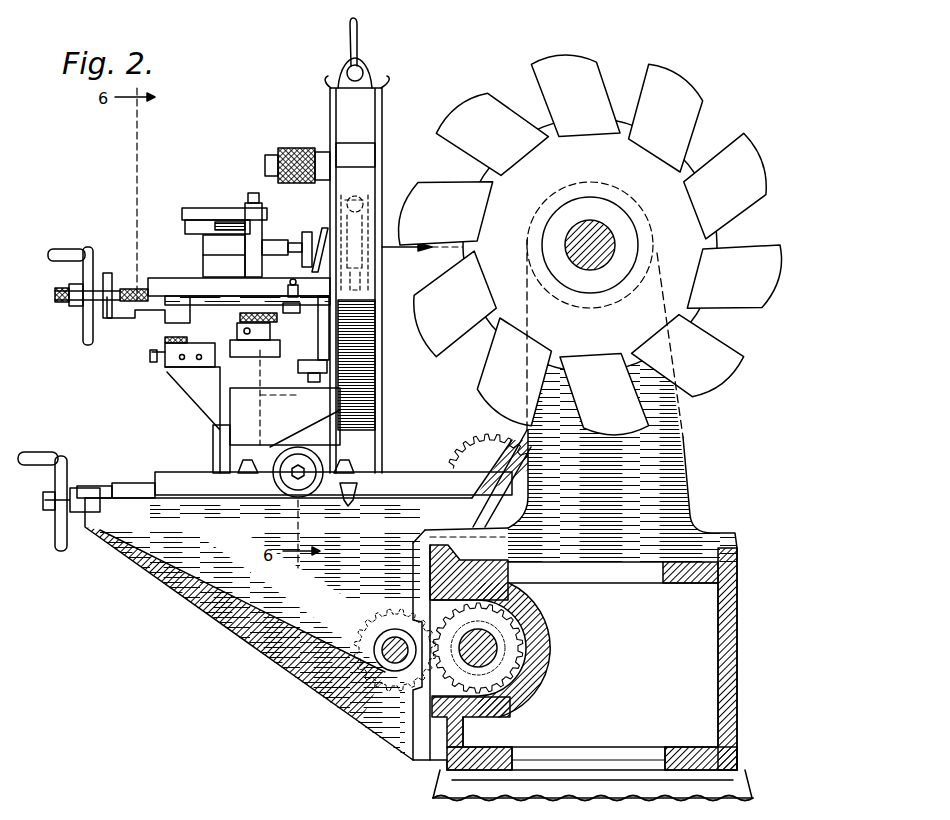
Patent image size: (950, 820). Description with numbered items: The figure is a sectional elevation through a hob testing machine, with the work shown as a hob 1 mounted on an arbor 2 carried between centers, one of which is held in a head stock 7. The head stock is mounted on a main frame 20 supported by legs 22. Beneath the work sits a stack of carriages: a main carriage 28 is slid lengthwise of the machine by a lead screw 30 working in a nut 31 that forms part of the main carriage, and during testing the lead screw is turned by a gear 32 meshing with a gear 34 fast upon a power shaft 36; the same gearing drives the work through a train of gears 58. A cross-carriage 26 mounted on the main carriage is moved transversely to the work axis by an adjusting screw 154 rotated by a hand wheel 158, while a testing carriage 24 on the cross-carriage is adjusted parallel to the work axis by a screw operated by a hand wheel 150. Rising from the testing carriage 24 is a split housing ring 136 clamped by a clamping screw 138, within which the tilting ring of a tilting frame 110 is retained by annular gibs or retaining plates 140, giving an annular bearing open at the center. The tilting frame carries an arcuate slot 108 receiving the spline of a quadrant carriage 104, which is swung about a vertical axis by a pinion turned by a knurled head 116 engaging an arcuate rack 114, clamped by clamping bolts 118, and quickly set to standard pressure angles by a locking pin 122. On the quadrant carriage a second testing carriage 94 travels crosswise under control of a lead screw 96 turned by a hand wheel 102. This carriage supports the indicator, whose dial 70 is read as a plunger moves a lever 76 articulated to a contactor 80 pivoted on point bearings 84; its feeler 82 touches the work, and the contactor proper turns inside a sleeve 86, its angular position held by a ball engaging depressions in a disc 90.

The hob 1 is at (677, 112).
The arbor 2 is at (600, 243).
The head stock 7 is at (655, 195).
The main frame 20 is at (730, 647).
The legs 22 is at (748, 790).
The testing carriage 24 is at (222, 446).
The cross-carriage 26 is at (162, 481).
The main carriage 28 is at (221, 582).
The lead screw 30 is at (481, 636).
The nut 31 is at (513, 647).
The gear 32 is at (538, 694).
The gear 34 is at (360, 623).
The power shaft 36 is at (392, 653).
The train of gears 58 is at (490, 436).
The dial 70 is at (192, 206).
The arm or lever 76 is at (277, 249).
The contactor 80 is at (302, 256).
The contact point or feeler 82 is at (400, 283).
The point bearings 84 is at (373, 204).
The sleeve 86 is at (318, 234).
The disc 90 is at (378, 262).
The testing carriage 94 is at (162, 291).
The lead screw 96 is at (134, 286).
The hand wheel 102 is at (90, 250).
The quadrant carriage 104 is at (192, 318).
The arcuate slot 108 is at (306, 358).
The tilting frame 110 is at (218, 380).
The arcuate rack 114 is at (339, 413).
The knurled head 116 is at (252, 318).
The clamping bolts 118 is at (240, 331).
The locking pin 122 is at (154, 360).
The housing ring 136 is at (356, 100).
The clamping screw 138 is at (363, 64).
The annular gibs or retaining plates 140 is at (412, 93).
The hand wheel 150 is at (284, 477).
The adjusting screw 154 is at (112, 490).
The hand wheel 158 is at (60, 457).